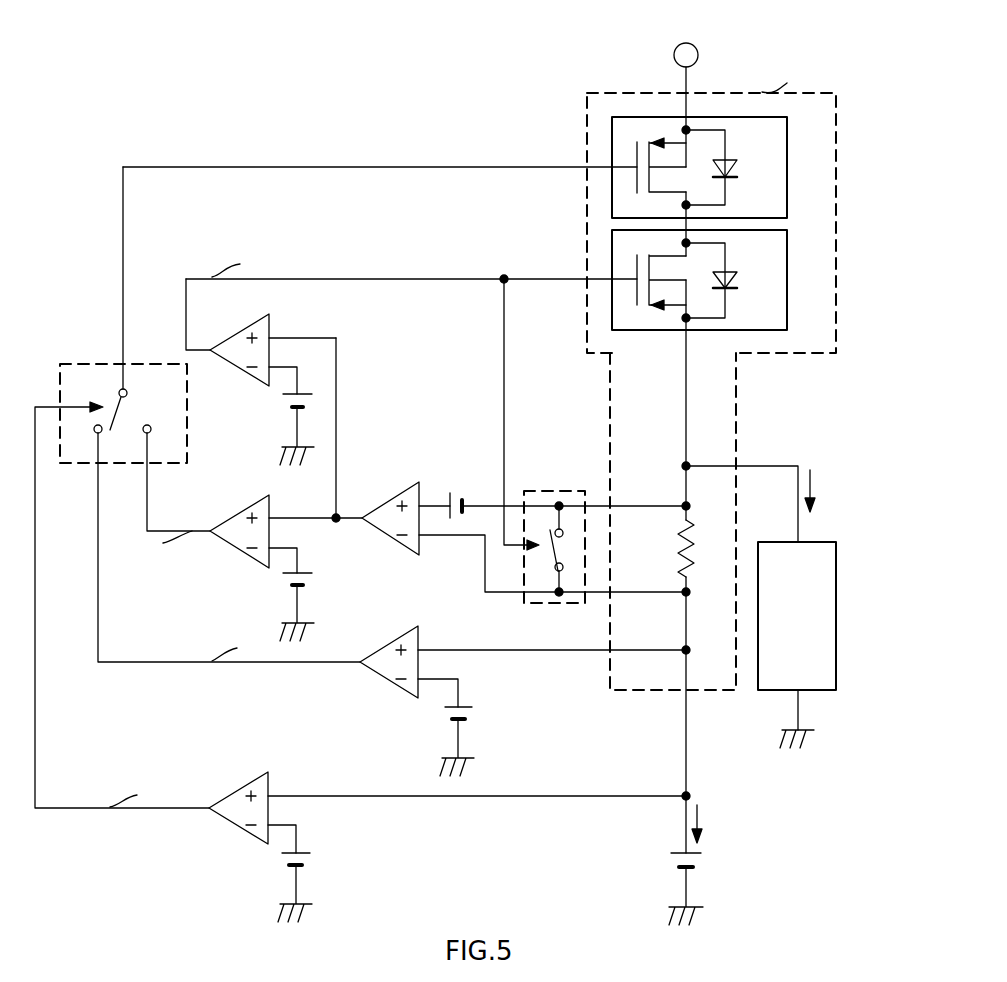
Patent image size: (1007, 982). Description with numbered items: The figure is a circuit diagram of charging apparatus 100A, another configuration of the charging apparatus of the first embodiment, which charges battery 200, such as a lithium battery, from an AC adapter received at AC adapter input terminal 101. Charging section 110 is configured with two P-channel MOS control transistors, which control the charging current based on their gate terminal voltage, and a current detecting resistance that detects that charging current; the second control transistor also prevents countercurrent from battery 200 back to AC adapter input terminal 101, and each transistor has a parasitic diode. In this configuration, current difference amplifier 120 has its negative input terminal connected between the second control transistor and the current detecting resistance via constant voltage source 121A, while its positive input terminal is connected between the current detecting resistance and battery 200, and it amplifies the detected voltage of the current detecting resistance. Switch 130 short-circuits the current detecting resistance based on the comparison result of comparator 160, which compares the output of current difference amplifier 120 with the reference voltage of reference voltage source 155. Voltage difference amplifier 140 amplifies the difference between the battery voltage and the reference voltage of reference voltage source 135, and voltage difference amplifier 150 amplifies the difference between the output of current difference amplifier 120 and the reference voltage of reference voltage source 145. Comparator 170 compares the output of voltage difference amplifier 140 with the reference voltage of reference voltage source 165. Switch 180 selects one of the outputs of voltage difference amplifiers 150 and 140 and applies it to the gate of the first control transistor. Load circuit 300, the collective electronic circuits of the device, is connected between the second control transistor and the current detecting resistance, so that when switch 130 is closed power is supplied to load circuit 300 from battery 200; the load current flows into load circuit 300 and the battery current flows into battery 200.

The charging apparatus 100A is at (463, 29).
The AC adapter input terminal 101 is at (697, 43).
The charging section 110 is at (738, 403).
The current difference amplifier 120 is at (398, 546).
The constant voltage source 121A is at (458, 492).
The switch 130 is at (540, 488).
The reference voltage source 135 is at (464, 700).
The voltage difference amplifier 140 is at (450, 635).
The reference voltage source 145 is at (303, 568).
The voltage difference amplifier 150 is at (240, 510).
The reference voltage source 155 is at (288, 408).
The comparator 160 is at (243, 328).
The reference voltage source 165 is at (300, 847).
The comparator 170 is at (238, 786).
The switch 180 is at (103, 358).
The battery 200 is at (677, 851).
The load circuit 300 is at (790, 542).